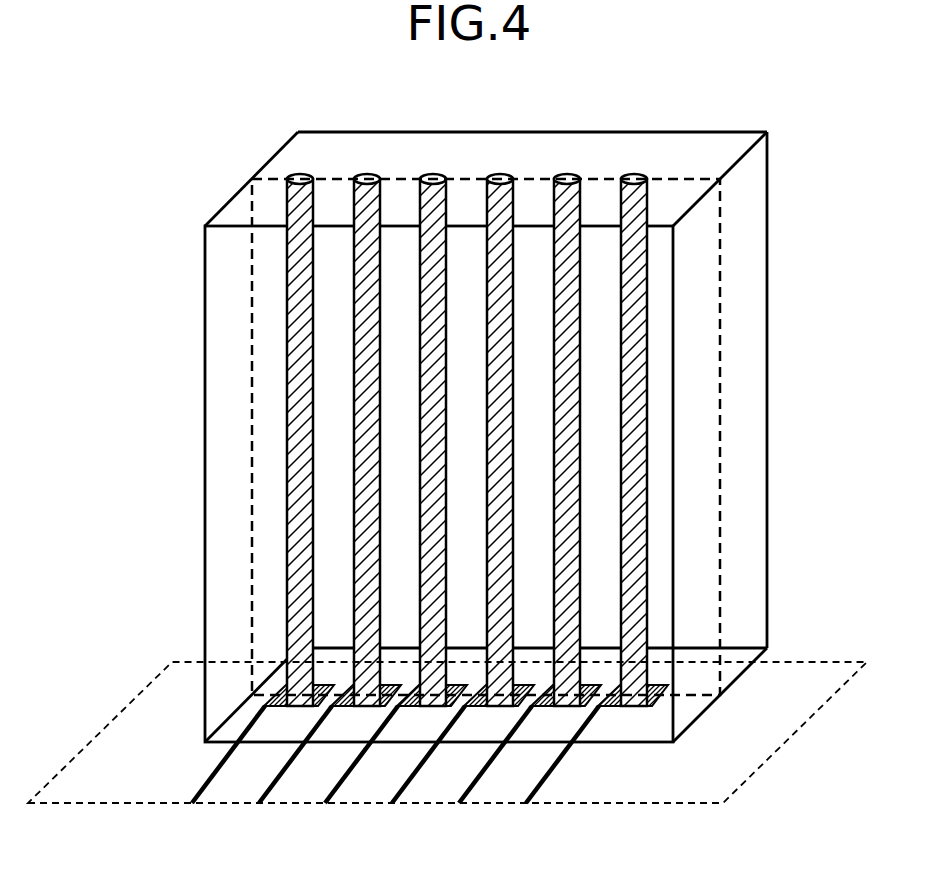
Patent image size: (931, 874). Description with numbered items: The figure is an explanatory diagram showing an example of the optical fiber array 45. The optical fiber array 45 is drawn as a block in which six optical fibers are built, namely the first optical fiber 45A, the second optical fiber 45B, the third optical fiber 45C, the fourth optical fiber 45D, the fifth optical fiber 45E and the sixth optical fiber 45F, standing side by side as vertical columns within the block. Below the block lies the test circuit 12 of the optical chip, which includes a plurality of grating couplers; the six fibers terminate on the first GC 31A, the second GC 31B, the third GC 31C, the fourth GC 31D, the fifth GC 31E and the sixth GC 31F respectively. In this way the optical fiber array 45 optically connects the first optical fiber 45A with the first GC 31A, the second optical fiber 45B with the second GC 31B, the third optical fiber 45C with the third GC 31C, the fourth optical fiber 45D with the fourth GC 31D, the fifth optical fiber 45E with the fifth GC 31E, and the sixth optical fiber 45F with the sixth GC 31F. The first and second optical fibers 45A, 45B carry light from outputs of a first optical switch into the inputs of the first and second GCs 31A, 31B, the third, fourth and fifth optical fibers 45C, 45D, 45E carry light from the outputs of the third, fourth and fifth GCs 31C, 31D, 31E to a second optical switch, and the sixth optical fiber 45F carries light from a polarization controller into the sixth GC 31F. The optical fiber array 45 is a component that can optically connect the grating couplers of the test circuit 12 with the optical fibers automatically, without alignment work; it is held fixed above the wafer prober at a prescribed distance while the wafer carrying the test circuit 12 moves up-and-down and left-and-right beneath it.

The optical fiber array 45 is at (800, 395).
The first optical fiber 45A is at (634, 175).
The second optical fiber 45B is at (567, 175).
The third optical fiber 45C is at (500, 175).
The fourth optical fiber 45D is at (433, 175).
The fifth optical fiber 45E is at (367, 175).
The sixth optical fiber 45F is at (298, 175).
The first GC 31A is at (641, 709).
The second GC 31B is at (574, 709).
The third GC 31C is at (507, 709).
The fourth GC 31D is at (440, 709).
The fifth GC 31E is at (374, 709).
The sixth GC 31F is at (307, 709).
The test circuit 12 is at (800, 678).